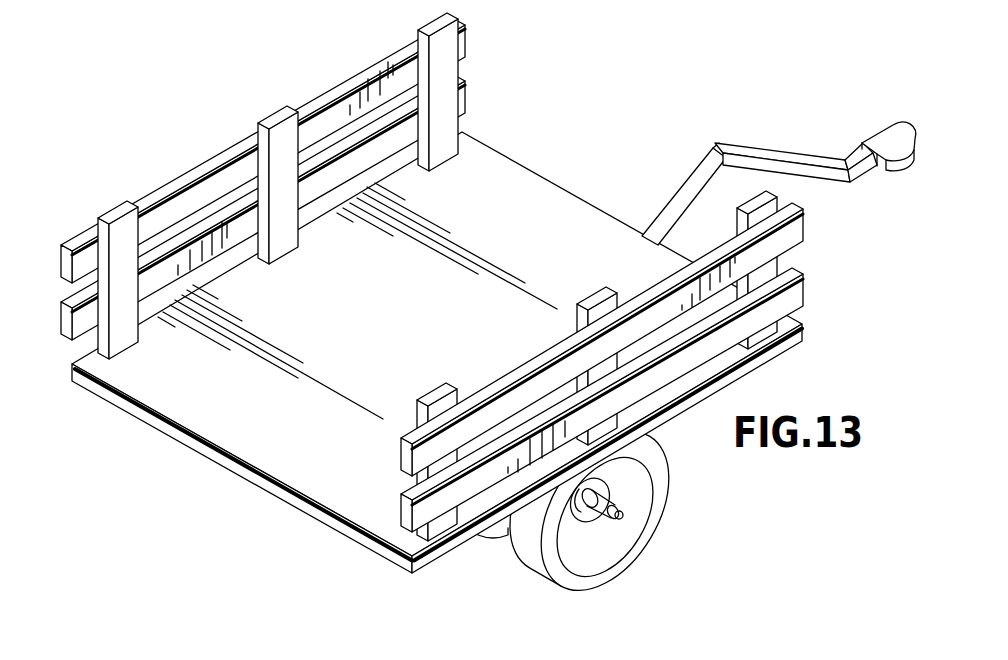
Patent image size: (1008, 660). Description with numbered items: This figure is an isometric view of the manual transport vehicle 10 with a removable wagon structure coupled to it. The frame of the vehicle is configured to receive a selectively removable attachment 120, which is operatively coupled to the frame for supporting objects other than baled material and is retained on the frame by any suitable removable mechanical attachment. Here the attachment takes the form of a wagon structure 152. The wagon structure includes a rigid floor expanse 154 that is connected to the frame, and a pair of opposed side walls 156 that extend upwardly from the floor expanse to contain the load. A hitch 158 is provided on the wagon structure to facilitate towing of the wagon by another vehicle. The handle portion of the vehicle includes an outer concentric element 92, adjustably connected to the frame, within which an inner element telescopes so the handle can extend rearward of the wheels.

The manual transport vehicle 10 is at (689, 494).
The outer concentric element 92 is at (688, 173).
The selectively removable attachment 120 is at (263, 489).
The wagon structure 152 is at (437, 352).
The rigid floor expanse 154 is at (537, 166).
The opposed side walls 156 is at (464, 34).
The hitch 158 is at (787, 155).